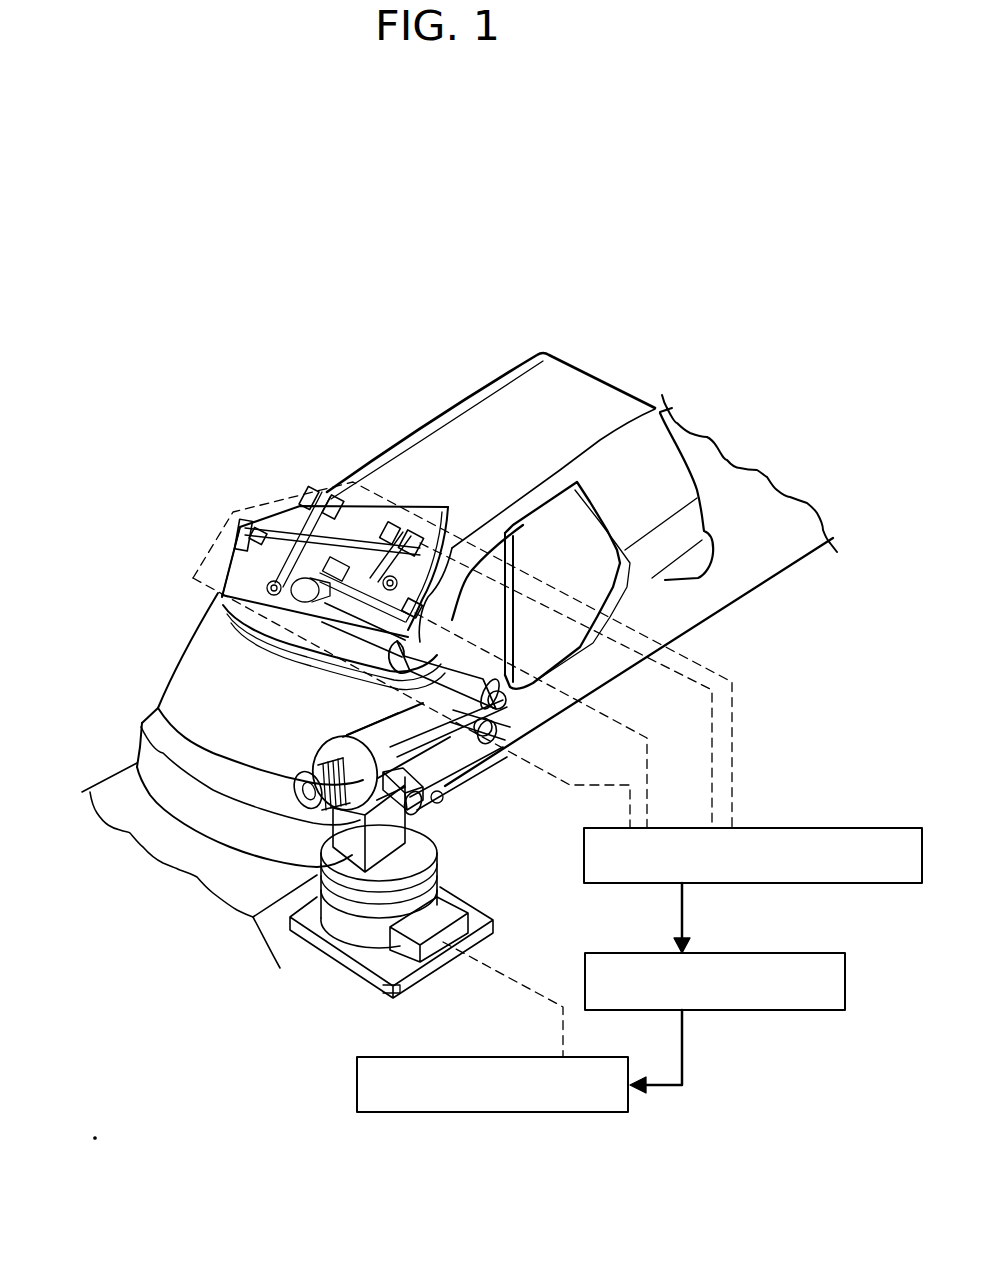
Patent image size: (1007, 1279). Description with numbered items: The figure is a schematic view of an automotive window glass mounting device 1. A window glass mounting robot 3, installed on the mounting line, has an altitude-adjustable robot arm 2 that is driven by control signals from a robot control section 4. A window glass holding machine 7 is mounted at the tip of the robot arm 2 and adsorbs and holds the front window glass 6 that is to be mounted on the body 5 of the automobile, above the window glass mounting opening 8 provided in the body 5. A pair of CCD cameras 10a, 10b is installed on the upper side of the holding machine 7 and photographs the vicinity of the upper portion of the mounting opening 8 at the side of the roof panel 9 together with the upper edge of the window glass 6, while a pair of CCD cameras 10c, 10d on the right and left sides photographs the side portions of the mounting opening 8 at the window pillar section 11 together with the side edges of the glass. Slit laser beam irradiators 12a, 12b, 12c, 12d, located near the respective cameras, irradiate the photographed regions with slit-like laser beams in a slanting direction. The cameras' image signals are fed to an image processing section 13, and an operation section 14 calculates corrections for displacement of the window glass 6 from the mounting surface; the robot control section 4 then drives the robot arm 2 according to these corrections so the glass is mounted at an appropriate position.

The window glass mounting device 1 is at (221, 464).
The robot arm 2 is at (360, 687).
The window glass mounting robot 3 is at (392, 820).
The robot control section 4 is at (488, 1102).
The body 5 is at (190, 700).
The window glass 6 is at (223, 590).
The window glass holding machine 7 is at (282, 537).
The window glass mounting opening 8 is at (500, 562).
The roof panel 9 is at (360, 512).
The CCD camera 10a is at (297, 488).
The CCD camera 10b is at (390, 530).
The CCD camera 10c is at (252, 512).
The CCD camera 10d is at (420, 598).
The window pillar section 11 is at (516, 615).
The slit laser beam irradiator 12a is at (312, 487).
The slit laser beam irradiator 12b is at (430, 532).
The slit laser beam irradiator 12c is at (233, 547).
The slit laser beam irradiator 12d is at (332, 670).
The image processing section 13 is at (777, 838).
The operation section 14 is at (767, 963).